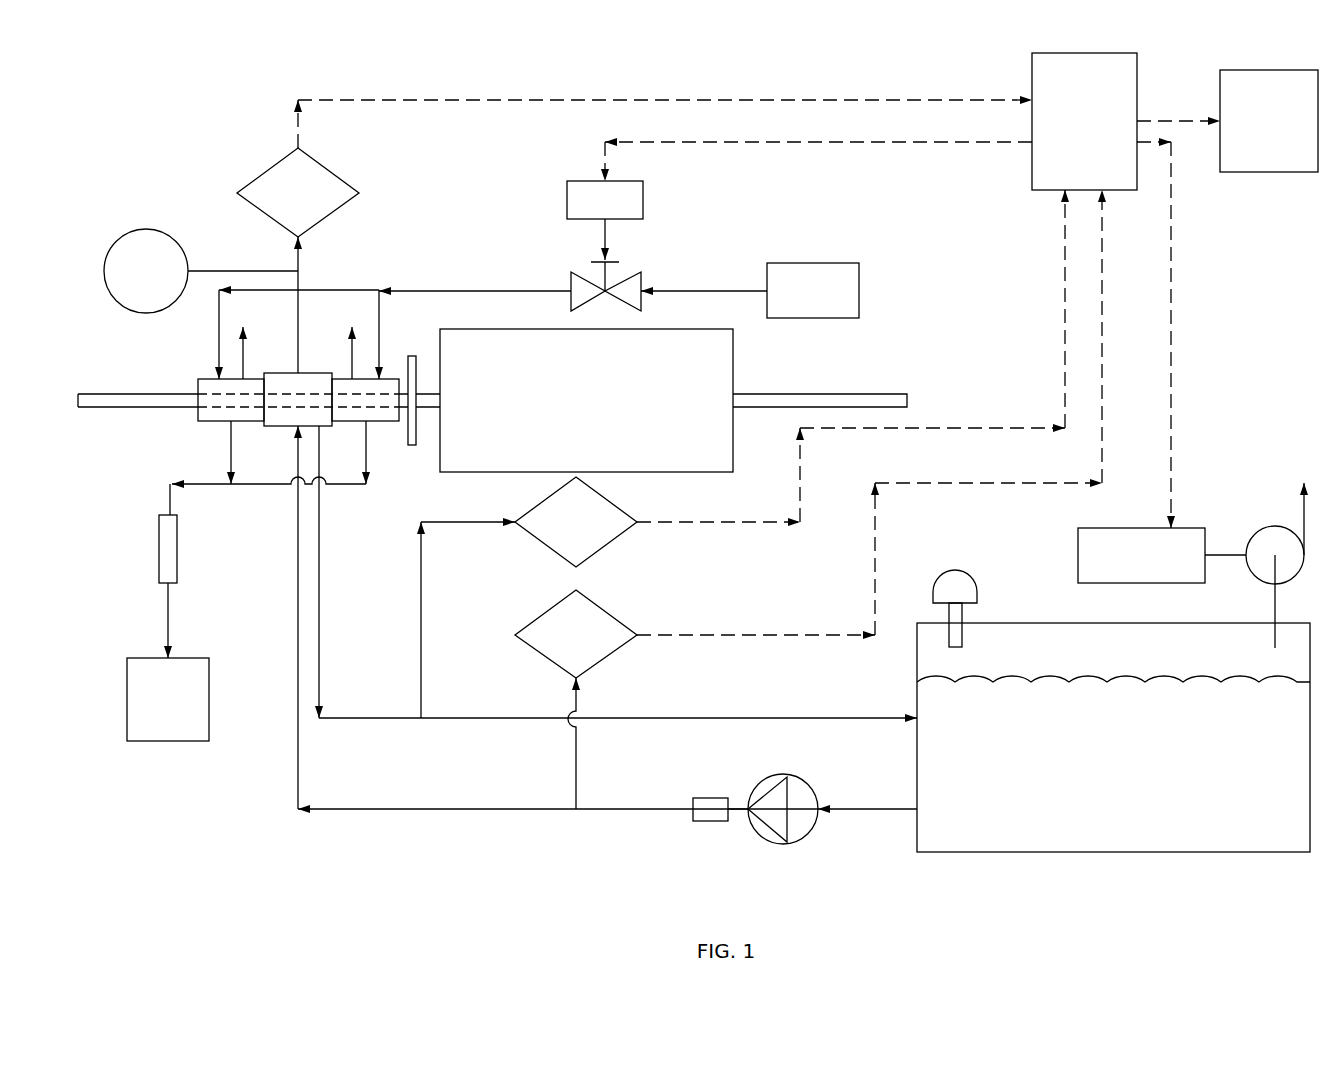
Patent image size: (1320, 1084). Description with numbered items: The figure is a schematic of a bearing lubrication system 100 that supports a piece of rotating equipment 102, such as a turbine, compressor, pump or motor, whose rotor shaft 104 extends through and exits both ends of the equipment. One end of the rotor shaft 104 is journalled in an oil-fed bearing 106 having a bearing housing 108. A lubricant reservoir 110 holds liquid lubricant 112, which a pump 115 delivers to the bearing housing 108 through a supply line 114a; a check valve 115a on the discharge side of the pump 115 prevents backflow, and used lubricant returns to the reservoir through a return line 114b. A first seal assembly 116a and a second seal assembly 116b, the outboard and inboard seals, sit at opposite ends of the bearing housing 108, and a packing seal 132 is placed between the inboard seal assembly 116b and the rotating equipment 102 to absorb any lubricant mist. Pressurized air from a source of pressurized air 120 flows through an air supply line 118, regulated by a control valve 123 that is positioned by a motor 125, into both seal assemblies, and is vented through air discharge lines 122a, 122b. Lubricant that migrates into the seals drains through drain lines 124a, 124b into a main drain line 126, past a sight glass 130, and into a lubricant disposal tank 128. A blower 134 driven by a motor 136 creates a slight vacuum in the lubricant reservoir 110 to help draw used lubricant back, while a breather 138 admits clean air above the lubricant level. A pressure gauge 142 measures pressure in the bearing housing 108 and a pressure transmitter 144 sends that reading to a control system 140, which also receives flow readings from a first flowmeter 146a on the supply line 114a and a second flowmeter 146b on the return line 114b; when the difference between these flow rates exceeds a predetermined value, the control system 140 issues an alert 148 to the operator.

The bearing lubrication system 100 is at (138, 62).
The rotating equipment 102 is at (569, 410).
The rotor shaft 104 is at (883, 393).
The bearing 106 is at (262, 430).
The bearing housing 108 is at (284, 428).
The lubricant reservoir 110 is at (965, 853).
The liquid lubricant 112 is at (1096, 794).
The supply line 114a is at (455, 811).
The return line 114b is at (481, 720).
The pump 115 is at (757, 832).
The check valve 115a is at (710, 798).
The first seal assembly 116a is at (197, 375).
The second seal assembly 116b is at (396, 374).
The air supply line 118 is at (508, 288).
The source of pressurized air 120 is at (796, 301).
The air discharge line 122a is at (248, 350).
The air discharge line 122b is at (347, 350).
The control valve 123 is at (643, 277).
The drain line 124a is at (230, 462).
The drain line 124b is at (370, 455).
The motor 125 is at (588, 211).
The main drain line 126 is at (210, 486).
The lubricant disposal tank 128 is at (151, 710).
The sight glass 130 is at (159, 532).
The packing seal 132 is at (416, 446).
The blower 134 is at (1260, 535).
The motor 136 is at (1124, 566).
The breather 138 is at (967, 580).
The control system 140 is at (1067, 162).
The pressure gauge 142 is at (129, 282).
The pressure transmitter 144 is at (281, 205).
The first flowmeter 146a is at (553, 645).
The second flowmeter 146b is at (553, 532).
The alert 148 is at (1253, 147).